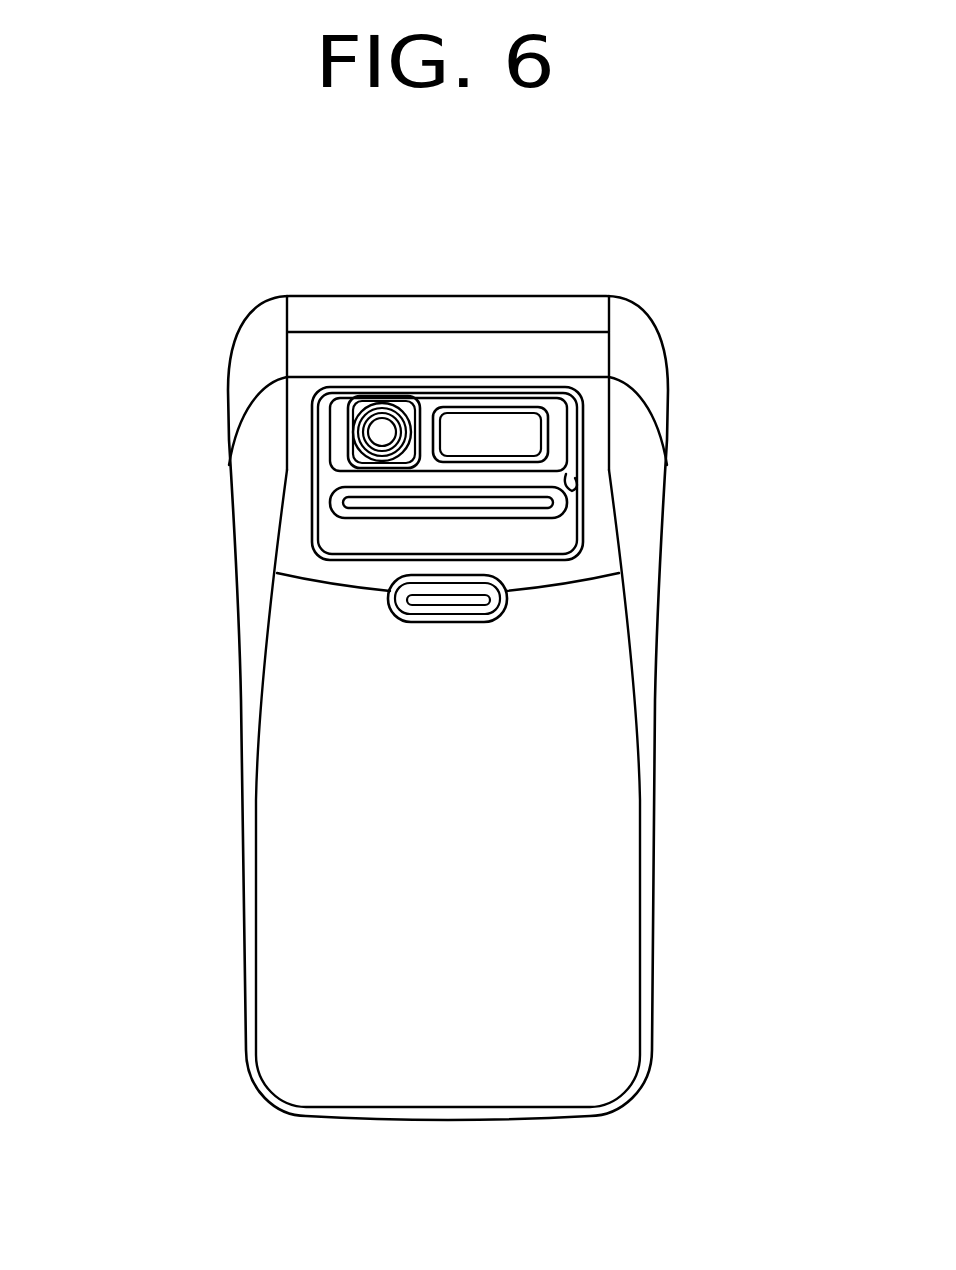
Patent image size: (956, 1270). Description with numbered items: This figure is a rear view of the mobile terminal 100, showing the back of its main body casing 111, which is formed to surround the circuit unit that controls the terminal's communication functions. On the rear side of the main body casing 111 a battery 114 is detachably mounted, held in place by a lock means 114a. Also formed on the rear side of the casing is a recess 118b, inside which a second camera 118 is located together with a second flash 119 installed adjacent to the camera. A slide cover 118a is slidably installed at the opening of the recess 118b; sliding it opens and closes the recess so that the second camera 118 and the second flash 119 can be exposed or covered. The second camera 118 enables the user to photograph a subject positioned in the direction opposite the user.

The mobile terminal 100 is at (132, 374).
The main body casing 111 is at (240, 703).
The battery 114 is at (602, 800).
The lock means 114a is at (473, 600).
The second camera 118 is at (383, 432).
The slide cover 118a is at (360, 535).
The recess 118b is at (572, 491).
The second flash 119 is at (495, 433).